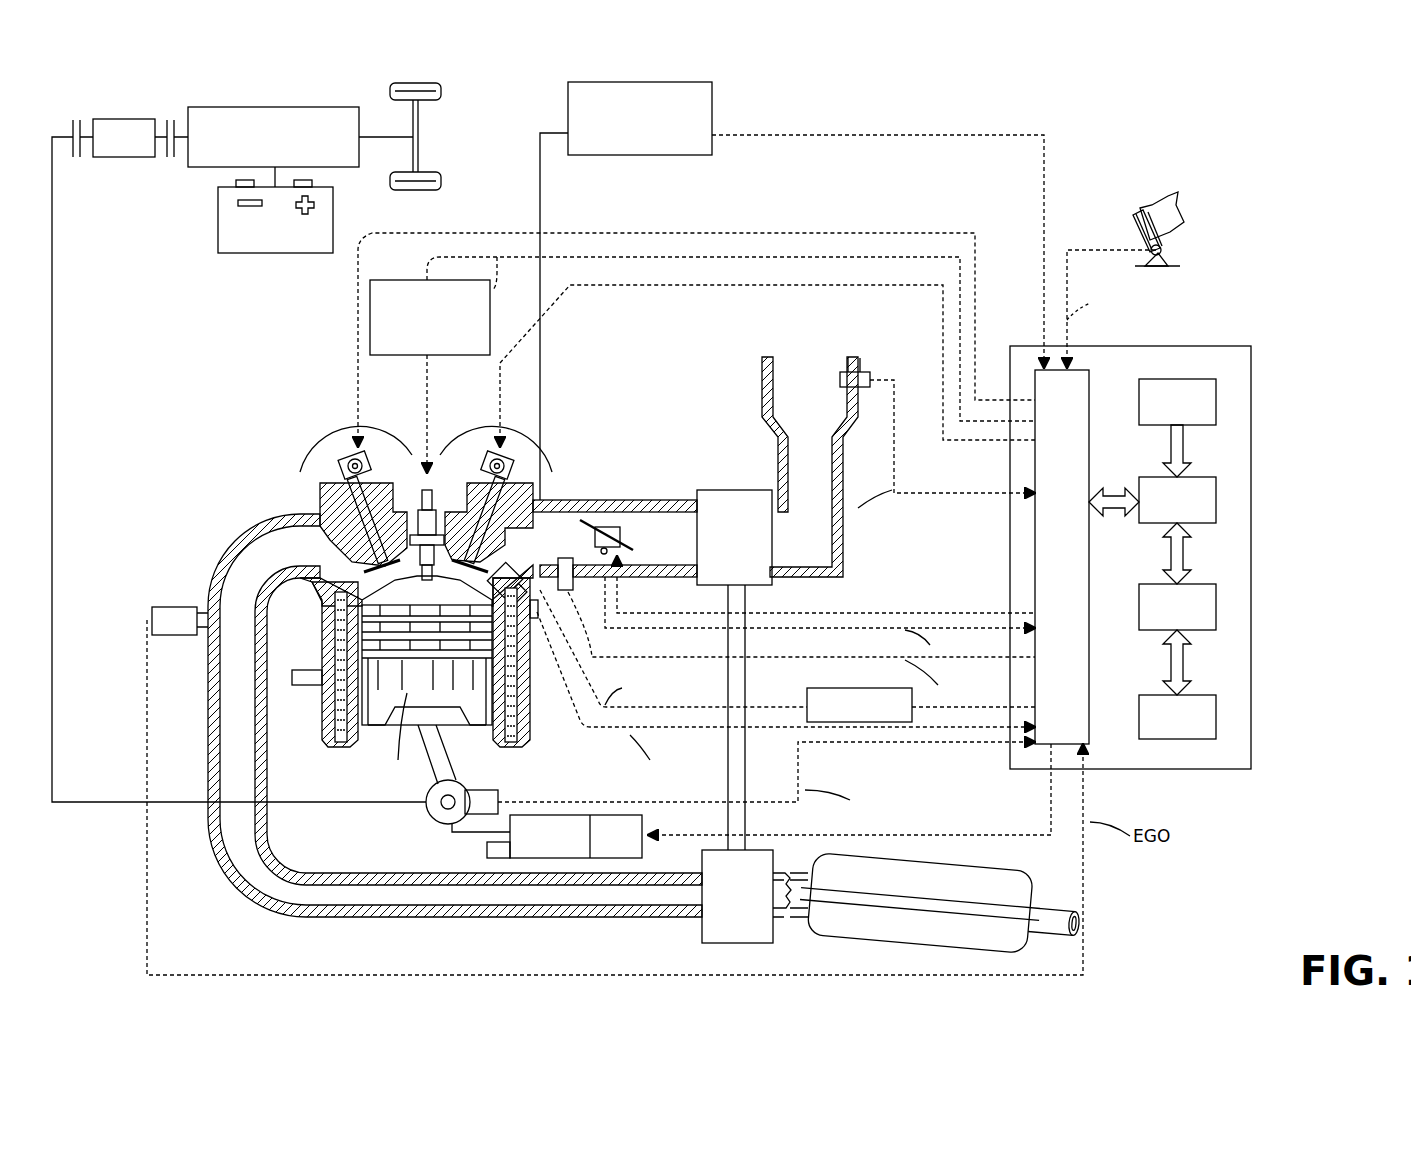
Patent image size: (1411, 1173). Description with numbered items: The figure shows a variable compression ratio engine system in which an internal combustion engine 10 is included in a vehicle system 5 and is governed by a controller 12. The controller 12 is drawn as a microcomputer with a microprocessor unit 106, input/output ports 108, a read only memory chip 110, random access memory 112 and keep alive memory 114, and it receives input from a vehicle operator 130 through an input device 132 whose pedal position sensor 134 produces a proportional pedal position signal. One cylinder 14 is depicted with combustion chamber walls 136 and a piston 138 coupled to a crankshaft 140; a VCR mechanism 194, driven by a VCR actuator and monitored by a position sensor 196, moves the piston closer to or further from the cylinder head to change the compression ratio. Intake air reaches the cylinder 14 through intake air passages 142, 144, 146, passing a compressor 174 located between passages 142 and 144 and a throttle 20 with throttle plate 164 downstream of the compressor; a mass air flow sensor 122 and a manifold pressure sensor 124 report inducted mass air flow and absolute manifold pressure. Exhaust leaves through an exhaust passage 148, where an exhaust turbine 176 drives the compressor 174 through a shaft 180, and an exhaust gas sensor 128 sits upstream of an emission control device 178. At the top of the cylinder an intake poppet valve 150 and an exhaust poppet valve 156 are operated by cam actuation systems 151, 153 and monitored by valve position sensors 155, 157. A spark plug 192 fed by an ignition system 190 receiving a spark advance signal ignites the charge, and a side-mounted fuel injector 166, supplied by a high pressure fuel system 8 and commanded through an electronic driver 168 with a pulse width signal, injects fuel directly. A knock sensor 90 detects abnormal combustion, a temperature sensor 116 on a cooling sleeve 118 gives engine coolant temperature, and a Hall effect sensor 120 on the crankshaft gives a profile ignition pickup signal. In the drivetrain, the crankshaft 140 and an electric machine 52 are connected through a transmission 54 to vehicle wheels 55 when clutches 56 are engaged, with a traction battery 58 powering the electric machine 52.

The vehicle system 5 is at (1330, 116).
The internal combustion engine 10 is at (243, 456).
The high pressure fuel system 8 is at (712, 97).
The controller 12 is at (1251, 347).
The cylinder 14 is at (322, 615).
The throttle 20 is at (605, 520).
The electric machine 52 is at (122, 157).
The transmission 54 is at (335, 167).
The vehicle wheels 55 is at (418, 190).
The clutch 56 is at (72, 125).
The traction battery 58 is at (272, 253).
The knock sensor 90 is at (312, 686).
The microprocessor unit 106 is at (1216, 496).
The input/output ports 108 is at (1095, 378).
The read only memory chip 110 is at (1216, 400).
The random access memory 112 is at (1216, 605).
The keep alive memory 114 is at (1216, 716).
The temperature sensor 116 is at (548, 730).
The cooling sleeve 118 is at (548, 745).
The Hall effect sensor 120 is at (465, 790).
The mass air flow sensor 122 is at (858, 370).
The manifold pressure sensor 124 is at (585, 630).
The exhaust gas sensor 128 is at (152, 611).
The vehicle operator 130 is at (1180, 204).
The input device 132 is at (1135, 218).
The pedal position sensor 134 is at (1164, 250).
The combustion chamber walls 136 is at (367, 740).
The piston 138 is at (407, 735).
The crankshaft 140 is at (426, 805).
The intake air passage 142 is at (810, 467).
The intake air passage 144 is at (615, 538).
The intake air passage 146 is at (565, 538).
The exhaust passage 148 is at (455, 715).
The intake poppet valve 150 is at (452, 512).
The cam actuation system 151 is at (477, 445).
The cam actuation system 153 is at (365, 452).
The valve position sensor 155 is at (510, 460).
The exhaust poppet valve 156 is at (350, 530).
The valve position sensor 157 is at (328, 462).
The throttle plate 164 is at (562, 512).
The fuel injector 166 is at (491, 541).
The electronic driver 168 is at (810, 688).
The compressor 174 is at (712, 488).
The exhaust turbine 176 is at (702, 925).
The emission control device 178 is at (985, 870).
The shaft 180 is at (746, 810).
The ignition system 190 is at (378, 280).
The spark plug 192 is at (415, 520).
The VCR mechanism 194 is at (576, 836).
The position sensor 196 is at (487, 850).